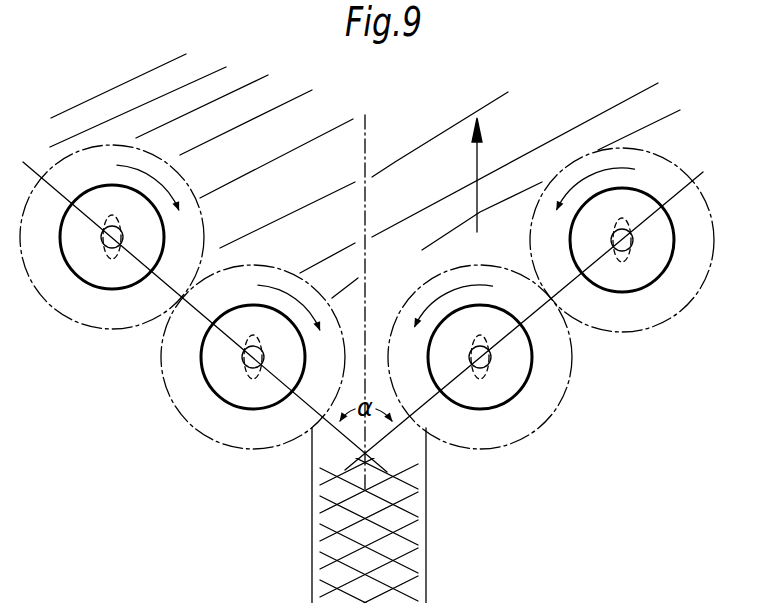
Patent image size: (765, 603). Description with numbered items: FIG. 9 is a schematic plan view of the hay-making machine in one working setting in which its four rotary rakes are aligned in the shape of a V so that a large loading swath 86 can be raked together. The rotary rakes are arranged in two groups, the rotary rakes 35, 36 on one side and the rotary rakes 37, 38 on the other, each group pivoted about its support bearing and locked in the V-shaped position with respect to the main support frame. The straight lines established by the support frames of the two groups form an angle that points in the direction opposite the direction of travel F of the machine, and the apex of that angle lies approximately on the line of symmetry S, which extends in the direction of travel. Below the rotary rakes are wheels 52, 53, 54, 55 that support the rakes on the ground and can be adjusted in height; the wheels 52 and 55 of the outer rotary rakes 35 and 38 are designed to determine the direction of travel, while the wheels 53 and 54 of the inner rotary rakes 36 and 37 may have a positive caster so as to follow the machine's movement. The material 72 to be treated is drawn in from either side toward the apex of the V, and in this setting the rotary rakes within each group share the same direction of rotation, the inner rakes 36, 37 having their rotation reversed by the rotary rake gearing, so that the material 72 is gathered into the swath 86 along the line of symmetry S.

The outer rotary rake 35 is at (112, 258).
The inner rotary rake 36 is at (253, 369).
The inner rotary rake 37 is at (480, 365).
The outer rotary rake 38 is at (622, 252).
The wheel 52 is at (121, 247).
The wheel 53 is at (260, 367).
The wheel 54 is at (486, 366).
The wheel 55 is at (627, 250).
The material to be treated 72 is at (245, 123).
The loading swath 86 is at (409, 515).
The line of symmetry S is at (369, 515).
The direction of travel F is at (494, 174).